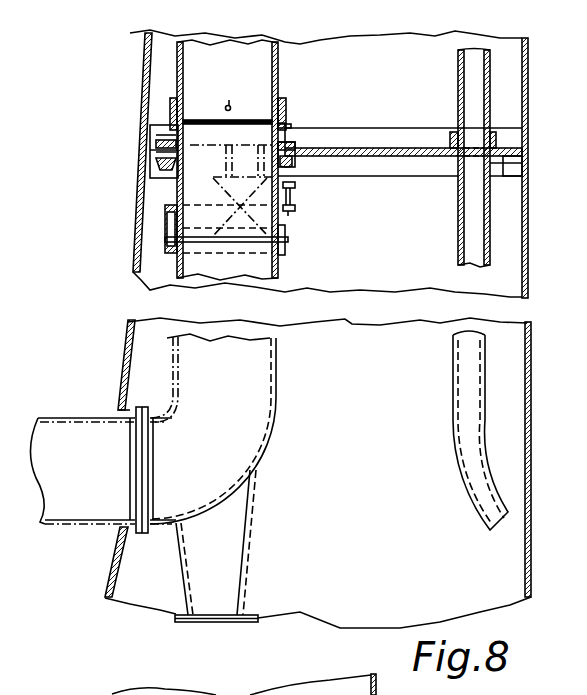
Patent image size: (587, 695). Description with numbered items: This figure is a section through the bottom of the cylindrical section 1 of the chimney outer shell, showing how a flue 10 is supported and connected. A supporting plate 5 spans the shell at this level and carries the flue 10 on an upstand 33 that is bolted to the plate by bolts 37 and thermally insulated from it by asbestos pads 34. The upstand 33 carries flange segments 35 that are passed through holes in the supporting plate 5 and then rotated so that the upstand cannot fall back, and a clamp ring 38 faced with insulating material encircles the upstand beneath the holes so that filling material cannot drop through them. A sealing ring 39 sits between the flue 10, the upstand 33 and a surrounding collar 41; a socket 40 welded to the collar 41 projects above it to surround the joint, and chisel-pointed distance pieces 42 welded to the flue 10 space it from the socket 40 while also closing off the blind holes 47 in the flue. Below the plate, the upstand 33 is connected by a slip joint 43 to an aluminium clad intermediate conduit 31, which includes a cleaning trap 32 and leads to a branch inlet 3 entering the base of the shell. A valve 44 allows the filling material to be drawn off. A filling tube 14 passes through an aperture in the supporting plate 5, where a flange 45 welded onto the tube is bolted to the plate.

The cylindrical section 1 is at (528, 49).
The branch inlets 3 is at (93, 425).
The supporting plate 5 is at (380, 158).
The flue 10 is at (285, 50).
The filling tube 14 is at (462, 72).
The intermediate conduit 31 is at (266, 358).
The cleaning trap 32 is at (242, 519).
The upstand 33 is at (290, 129).
The asbestos pads 34 is at (160, 138).
The flange segments 35 is at (160, 145).
The bolts 37 is at (163, 132).
The clamp ring 38 is at (157, 172).
The sealing ring 39 is at (181, 126).
The socket 40 is at (285, 107).
The collar 41 is at (287, 130).
The distance pieces 42 is at (175, 99).
The slip joints 43 is at (165, 218).
The valve 44 is at (280, 228).
The flange 45 is at (447, 146).
The blind holes 47 is at (275, 110).